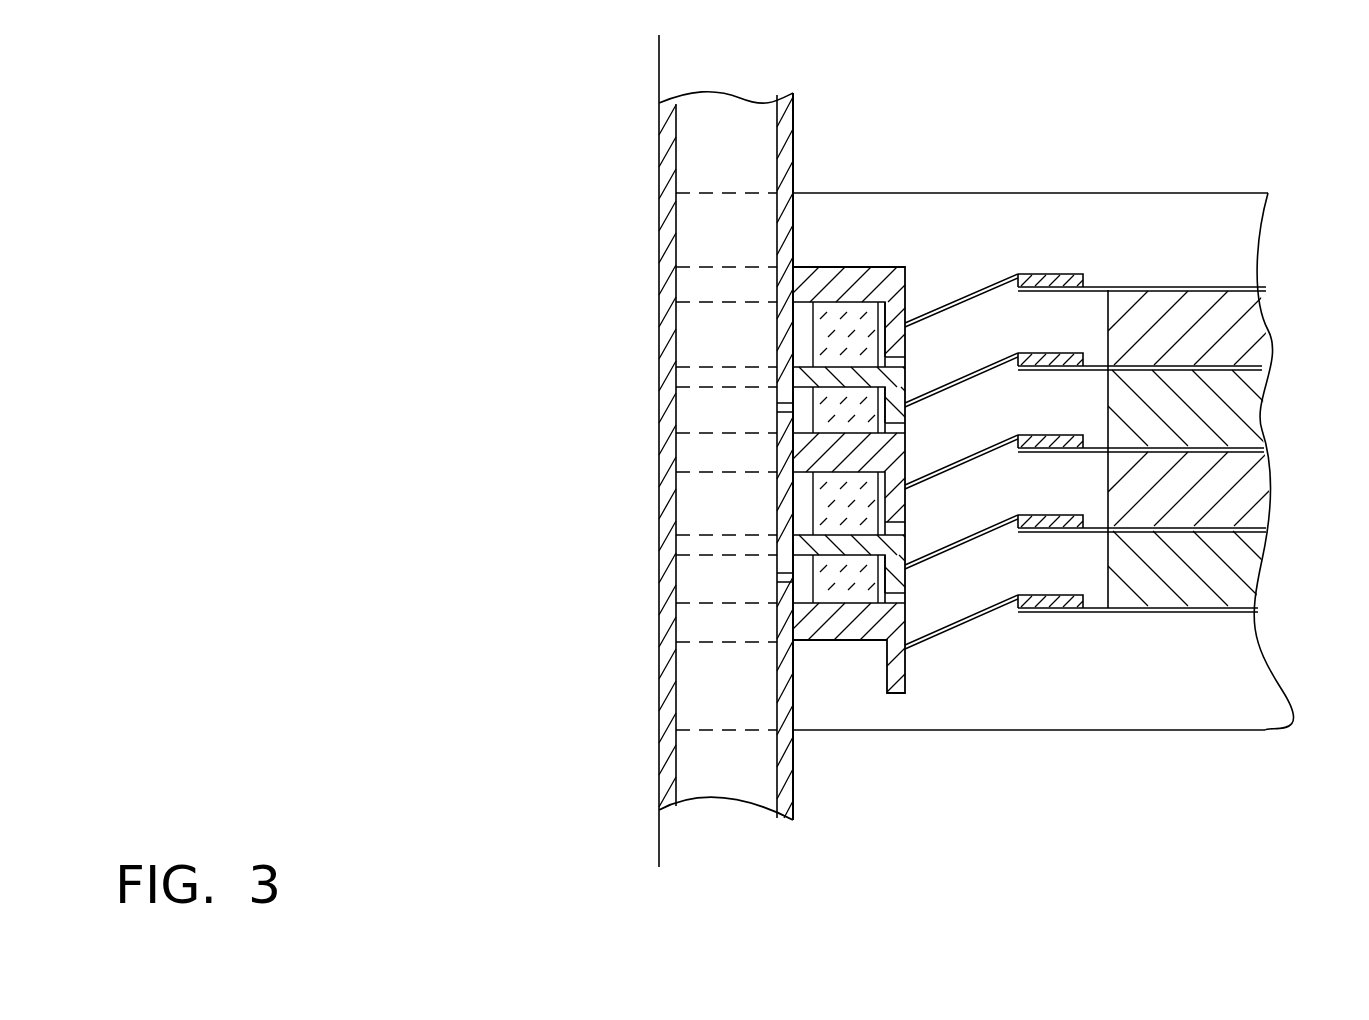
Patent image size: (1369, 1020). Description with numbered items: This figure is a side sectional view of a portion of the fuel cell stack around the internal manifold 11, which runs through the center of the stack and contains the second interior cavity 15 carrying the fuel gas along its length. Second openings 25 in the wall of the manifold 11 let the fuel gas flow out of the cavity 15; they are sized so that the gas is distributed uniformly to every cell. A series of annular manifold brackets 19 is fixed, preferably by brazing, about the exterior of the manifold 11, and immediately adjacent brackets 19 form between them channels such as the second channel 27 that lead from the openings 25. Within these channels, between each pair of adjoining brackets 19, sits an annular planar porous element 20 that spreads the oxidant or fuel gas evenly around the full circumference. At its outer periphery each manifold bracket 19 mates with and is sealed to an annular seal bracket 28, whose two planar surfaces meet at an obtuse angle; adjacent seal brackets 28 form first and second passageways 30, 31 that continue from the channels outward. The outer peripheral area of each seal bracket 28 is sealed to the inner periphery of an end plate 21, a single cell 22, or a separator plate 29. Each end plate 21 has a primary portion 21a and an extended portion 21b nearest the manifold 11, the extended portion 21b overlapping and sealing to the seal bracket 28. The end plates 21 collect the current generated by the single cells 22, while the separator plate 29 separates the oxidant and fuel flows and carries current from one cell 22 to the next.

The internal manifold 11 is at (793, 130).
The second interior cavity 15 is at (703, 132).
The manifold bracket 19 is at (875, 415).
The porous element 20 is at (866, 310).
The end plate 21 is at (1238, 401).
The primary portion 21a is at (1220, 292).
The extended portion 21b is at (1013, 298).
The single cell 22 is at (1212, 380).
The second opening 25 is at (790, 408).
The second channel 27 is at (896, 424).
The seal bracket 28 is at (985, 292).
The separator plate 29 is at (1219, 458).
The first passageway 30 is at (1053, 348).
The second passageway 31 is at (1056, 426).